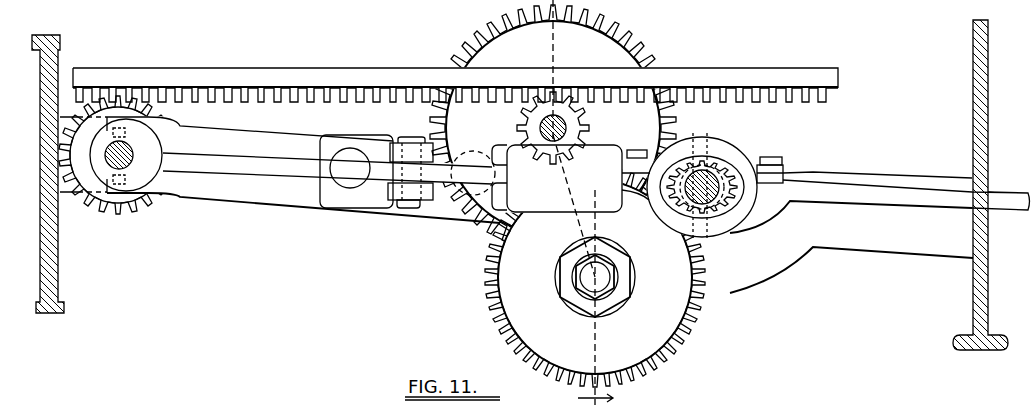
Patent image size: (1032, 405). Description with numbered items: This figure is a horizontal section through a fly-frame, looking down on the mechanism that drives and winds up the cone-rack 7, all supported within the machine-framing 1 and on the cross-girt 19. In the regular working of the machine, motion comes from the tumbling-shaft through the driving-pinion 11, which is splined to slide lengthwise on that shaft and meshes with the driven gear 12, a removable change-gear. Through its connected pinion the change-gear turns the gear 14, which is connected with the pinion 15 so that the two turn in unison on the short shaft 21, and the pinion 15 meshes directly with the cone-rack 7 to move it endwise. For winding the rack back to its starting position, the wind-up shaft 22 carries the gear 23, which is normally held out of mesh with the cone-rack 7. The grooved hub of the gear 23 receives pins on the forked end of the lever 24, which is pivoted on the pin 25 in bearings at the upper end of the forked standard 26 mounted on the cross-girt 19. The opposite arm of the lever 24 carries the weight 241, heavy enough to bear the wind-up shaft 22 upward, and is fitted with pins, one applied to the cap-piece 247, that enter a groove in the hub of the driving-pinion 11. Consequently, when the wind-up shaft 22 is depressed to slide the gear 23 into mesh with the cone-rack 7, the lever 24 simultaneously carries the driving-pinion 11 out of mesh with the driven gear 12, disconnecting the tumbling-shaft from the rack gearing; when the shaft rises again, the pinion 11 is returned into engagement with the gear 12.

The machine-framing 1 is at (34, 226).
The cone-rack 7 is at (300, 67).
The driving-pinion 11 is at (735, 167).
The driven gear 12 is at (595, 286).
The gear 14 is at (553, 138).
The pinion 15 is at (571, 109).
The cross-girt 19 is at (516, 205).
The short shaft 21 is at (550, 139).
The wind-up shaft 22 is at (127, 166).
The gear 23 is at (105, 222).
The lever 24 is at (300, 161).
The pin 25 is at (413, 215).
The forked standard 26 is at (392, 143).
The weight 241 is at (557, 178).
The cap-piece 247 is at (740, 156).